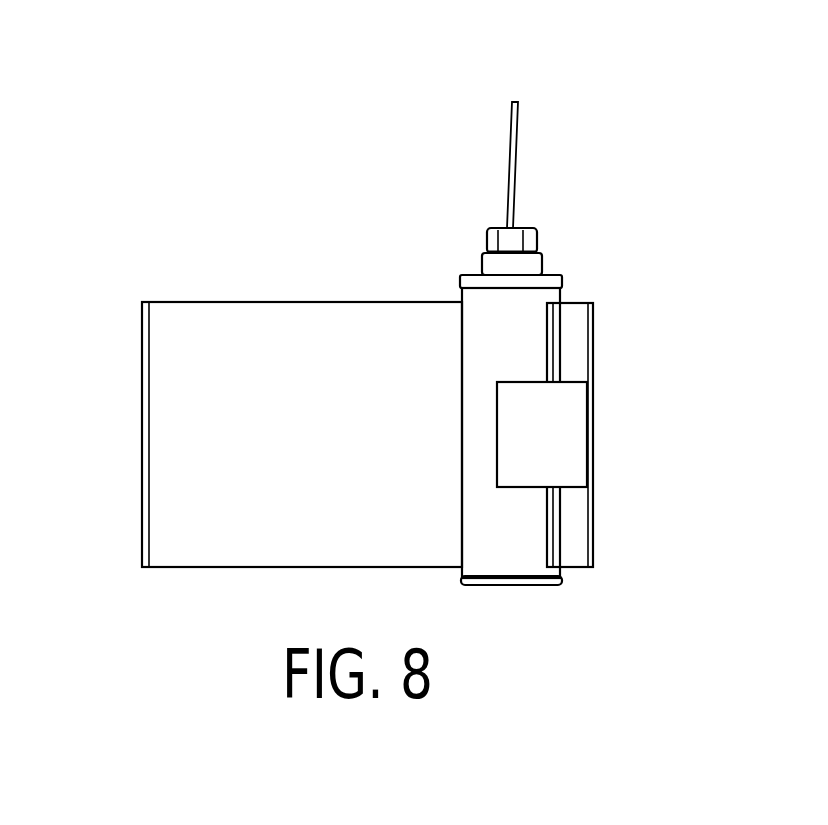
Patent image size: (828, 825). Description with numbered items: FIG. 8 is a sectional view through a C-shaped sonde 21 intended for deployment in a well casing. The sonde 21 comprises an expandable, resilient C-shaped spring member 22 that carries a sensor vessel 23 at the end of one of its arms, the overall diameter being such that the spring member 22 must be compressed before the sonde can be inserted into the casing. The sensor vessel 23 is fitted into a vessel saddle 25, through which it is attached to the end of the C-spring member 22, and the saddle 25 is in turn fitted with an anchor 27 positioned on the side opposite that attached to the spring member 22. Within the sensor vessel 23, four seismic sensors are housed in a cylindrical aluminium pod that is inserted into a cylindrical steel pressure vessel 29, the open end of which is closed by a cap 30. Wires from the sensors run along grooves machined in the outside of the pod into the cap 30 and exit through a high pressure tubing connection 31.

The sonde 21 is at (237, 286).
The C-shaped spring member 22 is at (183, 377).
The sensor vessel 23 is at (516, 521).
The vessel saddle 25 is at (573, 347).
The anchor 27 is at (567, 440).
The cylindrical steel pressure vessel 29 is at (552, 573).
The cap 30 is at (525, 263).
The high pressure tubing connection 31 is at (507, 165).